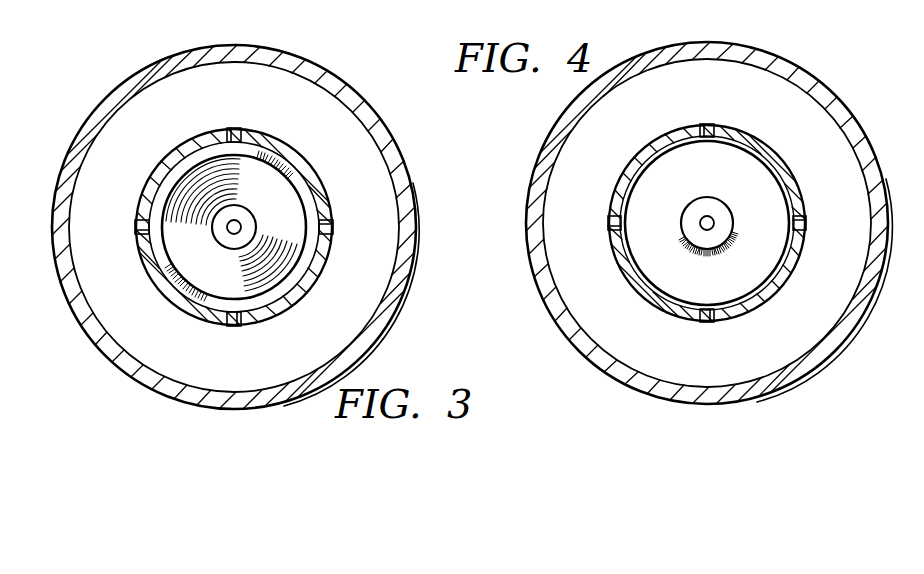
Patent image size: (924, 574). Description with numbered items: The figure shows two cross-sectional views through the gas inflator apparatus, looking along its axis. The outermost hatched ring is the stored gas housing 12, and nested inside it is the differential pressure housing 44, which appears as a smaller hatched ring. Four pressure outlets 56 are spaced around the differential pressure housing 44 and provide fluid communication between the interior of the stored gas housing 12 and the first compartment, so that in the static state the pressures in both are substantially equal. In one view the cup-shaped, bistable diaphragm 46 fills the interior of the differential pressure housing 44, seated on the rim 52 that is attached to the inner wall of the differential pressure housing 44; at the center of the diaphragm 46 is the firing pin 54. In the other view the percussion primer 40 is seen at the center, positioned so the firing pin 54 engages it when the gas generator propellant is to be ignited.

In FIG. 3, the stored gas housing 12 is at (356, 94).
In FIG. 4, the stored gas housing 12 is at (827, 93).
In FIG. 4, the percussion primer 40 is at (725, 214).
In FIG. 3, the differential pressure housing 44 is at (302, 156).
In FIG. 4, the differential pressure housing 44 is at (772, 154).
In FIG. 3, the diaphragm 46 is at (191, 259).
In FIG. 3, the rim 52 is at (215, 300).
In FIG. 3, the firing pin 54 is at (263, 216).
In FIG. 3, the pressure outlets 56 is at (236, 128).
In FIG. 4, the pressure outlets 56 is at (708, 124).